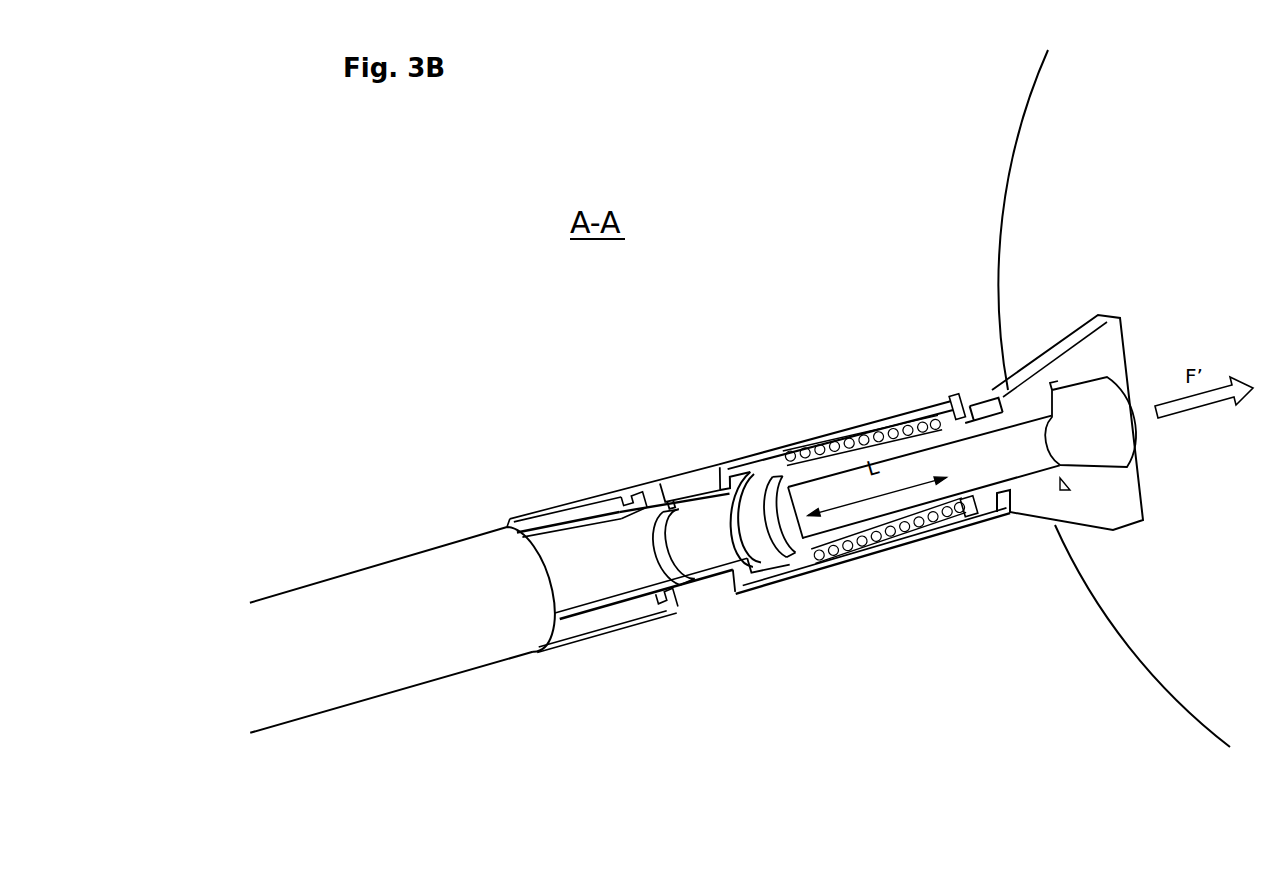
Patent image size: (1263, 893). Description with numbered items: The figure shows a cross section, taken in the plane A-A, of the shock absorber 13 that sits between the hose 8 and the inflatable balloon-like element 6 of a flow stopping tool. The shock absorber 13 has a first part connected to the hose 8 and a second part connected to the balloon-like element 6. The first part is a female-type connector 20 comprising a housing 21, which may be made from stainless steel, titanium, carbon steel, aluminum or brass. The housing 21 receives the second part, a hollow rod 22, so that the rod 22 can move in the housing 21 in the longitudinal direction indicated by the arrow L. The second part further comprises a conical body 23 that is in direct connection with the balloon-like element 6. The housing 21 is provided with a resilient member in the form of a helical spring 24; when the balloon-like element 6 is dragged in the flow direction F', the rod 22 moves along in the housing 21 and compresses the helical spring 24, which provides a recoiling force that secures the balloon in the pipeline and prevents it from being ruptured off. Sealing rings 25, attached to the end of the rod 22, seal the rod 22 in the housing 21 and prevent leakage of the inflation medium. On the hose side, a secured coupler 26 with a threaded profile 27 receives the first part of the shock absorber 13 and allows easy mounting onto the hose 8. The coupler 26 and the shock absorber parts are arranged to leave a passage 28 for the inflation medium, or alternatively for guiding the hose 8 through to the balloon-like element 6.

The inflatable balloon-like element 6 is at (1060, 142).
The hose 8 is at (379, 587).
The shock absorber 13 is at (656, 370).
The female-type connector 20 is at (762, 560).
The housing 21 is at (810, 573).
The hollow rod 22 is at (868, 520).
The conical body 23 is at (1022, 400).
The helical spring 24 is at (863, 445).
The sealing rings 25 is at (771, 483).
The secured coupler 26 is at (680, 490).
The threaded profile 27 is at (647, 557).
The passage 28 is at (970, 470).